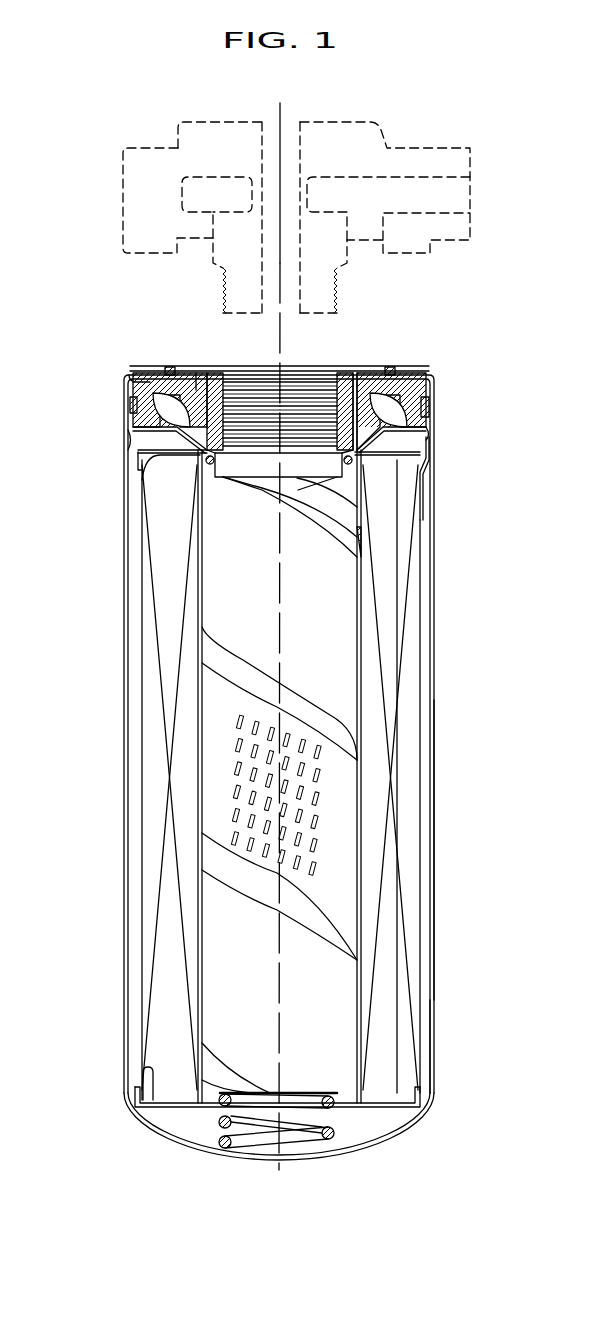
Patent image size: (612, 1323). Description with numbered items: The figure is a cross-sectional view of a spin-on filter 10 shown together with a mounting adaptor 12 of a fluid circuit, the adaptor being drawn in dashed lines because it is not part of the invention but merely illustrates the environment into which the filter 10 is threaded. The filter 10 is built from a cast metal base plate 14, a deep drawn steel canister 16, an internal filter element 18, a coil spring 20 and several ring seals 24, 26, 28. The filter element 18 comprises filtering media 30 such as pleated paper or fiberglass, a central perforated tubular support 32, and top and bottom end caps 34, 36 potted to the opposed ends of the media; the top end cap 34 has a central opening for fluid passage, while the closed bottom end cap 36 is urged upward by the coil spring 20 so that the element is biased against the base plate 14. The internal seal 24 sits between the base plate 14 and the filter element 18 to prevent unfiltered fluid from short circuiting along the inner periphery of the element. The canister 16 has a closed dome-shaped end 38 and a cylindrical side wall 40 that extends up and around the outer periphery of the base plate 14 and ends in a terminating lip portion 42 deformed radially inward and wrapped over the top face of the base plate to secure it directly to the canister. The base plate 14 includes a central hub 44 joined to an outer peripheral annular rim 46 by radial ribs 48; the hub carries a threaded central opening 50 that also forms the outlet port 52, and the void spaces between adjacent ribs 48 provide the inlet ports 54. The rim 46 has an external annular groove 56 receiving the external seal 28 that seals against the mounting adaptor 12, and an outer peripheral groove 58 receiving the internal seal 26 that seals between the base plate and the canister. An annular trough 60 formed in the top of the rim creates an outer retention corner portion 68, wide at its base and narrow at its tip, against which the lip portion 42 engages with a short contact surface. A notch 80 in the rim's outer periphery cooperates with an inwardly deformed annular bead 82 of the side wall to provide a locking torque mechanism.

The filter 10 is at (492, 722).
The mounting adaptor 12 is at (480, 152).
The base plate 14 is at (436, 376).
The canister 16 is at (437, 916).
The filter element 18 is at (405, 808).
The coil spring 20 is at (338, 1137).
The internal seal 24 is at (362, 498).
The internal seal 26 is at (431, 405).
The external seal 28 is at (390, 371).
The filtering media 30 is at (150, 790).
The central perforated tubular support 32 is at (196, 940).
The top end cap 34 is at (145, 477).
The bottom end cap 36 is at (143, 1068).
The dome-shaped end 38 is at (393, 1138).
The cylindrical side wall 40 is at (432, 1042).
The terminating lip portion 42 is at (129, 373).
The central hub 44 is at (214, 375).
The outer peripheral annular rim 46 is at (162, 372).
The ribs 48 is at (196, 373).
The threaded central opening 50 is at (316, 390).
The outlet port 52 is at (260, 390).
The inlet ports 54 is at (365, 408).
The external annular groove 56 is at (402, 380).
The outer peripheral groove 58 is at (430, 443).
The annular trough 60 is at (128, 393).
The retention corner portion 68 is at (127, 382).
The notch 80 is at (130, 438).
The inwardly deformed annular bead 82 is at (128, 455).